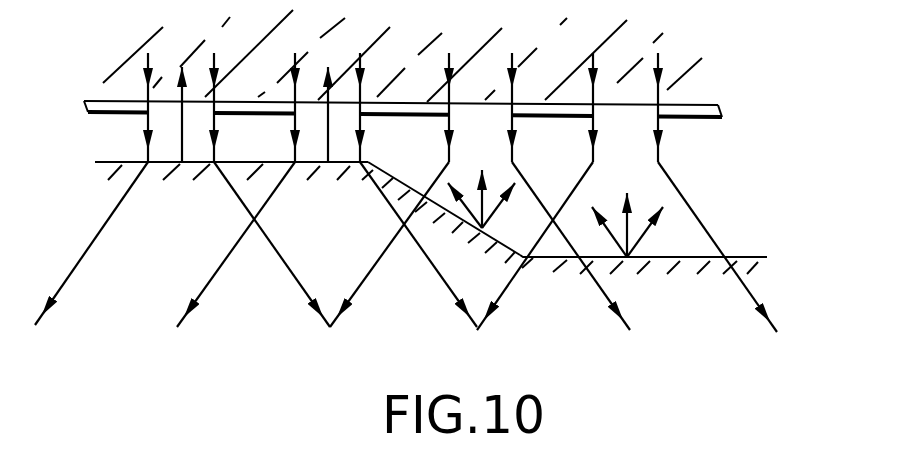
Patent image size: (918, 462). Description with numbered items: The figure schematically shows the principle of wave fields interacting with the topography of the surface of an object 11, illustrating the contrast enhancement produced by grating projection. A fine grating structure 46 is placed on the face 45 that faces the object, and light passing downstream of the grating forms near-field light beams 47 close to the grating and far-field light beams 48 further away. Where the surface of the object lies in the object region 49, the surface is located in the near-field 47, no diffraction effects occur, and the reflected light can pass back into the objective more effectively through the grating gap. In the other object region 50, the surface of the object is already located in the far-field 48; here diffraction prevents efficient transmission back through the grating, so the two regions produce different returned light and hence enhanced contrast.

The object 11 is at (747, 262).
The face 45 is at (686, 102).
The fine grating structure 46 is at (722, 109).
The near-field light beams 47 is at (635, 125).
The far-field light beams 48 is at (685, 238).
The object region 49 is at (330, 164).
The object region 50 is at (632, 258).